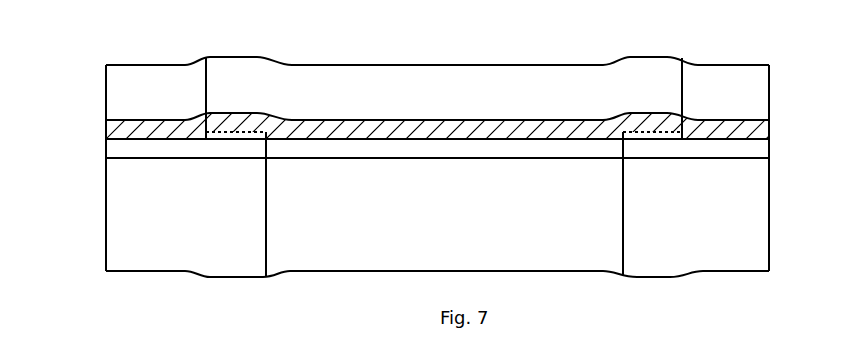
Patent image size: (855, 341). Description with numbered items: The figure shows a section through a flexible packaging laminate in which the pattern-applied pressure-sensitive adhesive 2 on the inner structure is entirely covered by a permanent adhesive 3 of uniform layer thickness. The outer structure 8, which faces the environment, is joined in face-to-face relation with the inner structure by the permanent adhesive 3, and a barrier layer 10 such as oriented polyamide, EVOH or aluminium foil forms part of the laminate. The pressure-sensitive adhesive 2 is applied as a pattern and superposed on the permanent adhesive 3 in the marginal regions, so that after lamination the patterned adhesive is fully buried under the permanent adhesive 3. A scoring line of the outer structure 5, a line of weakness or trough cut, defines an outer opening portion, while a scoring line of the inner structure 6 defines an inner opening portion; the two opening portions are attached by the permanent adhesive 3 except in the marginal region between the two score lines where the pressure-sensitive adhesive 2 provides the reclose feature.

The outer structure of the laminate 8 is at (120, 93).
The permanent adhesive 3 is at (753, 130).
The barrier layer 10 is at (115, 148).
The scoring line of the outer structure 5 is at (684, 92).
The pattern-applied pressure-sensitive adhesive 2 is at (662, 137).
The scoring line of the inner structure 6 is at (623, 228).